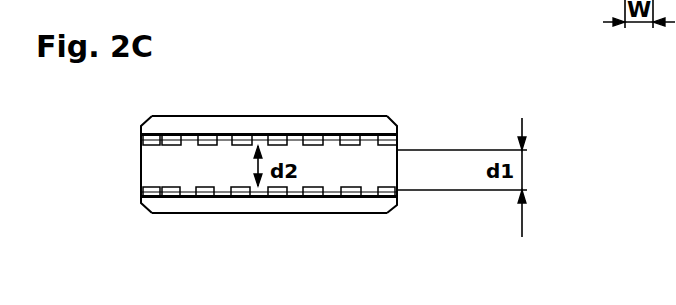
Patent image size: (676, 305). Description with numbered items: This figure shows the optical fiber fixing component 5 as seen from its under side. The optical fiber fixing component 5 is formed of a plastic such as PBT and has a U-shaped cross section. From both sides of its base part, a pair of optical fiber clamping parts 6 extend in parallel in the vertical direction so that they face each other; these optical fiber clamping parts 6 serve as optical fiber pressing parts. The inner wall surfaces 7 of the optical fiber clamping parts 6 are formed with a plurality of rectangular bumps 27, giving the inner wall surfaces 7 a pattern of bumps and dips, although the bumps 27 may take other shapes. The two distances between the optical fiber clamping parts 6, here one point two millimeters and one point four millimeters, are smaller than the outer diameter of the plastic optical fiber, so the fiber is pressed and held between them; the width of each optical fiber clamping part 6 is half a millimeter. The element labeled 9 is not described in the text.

The optical fiber fixing component 5 is at (549, 158).
The optical fiber clamping parts 6 is at (372, 122).
The inner wall surfaces 7 is at (168, 186).
The outer protective layer 9 is at (332, 117).
The rectangular bumps 27 is at (208, 134).